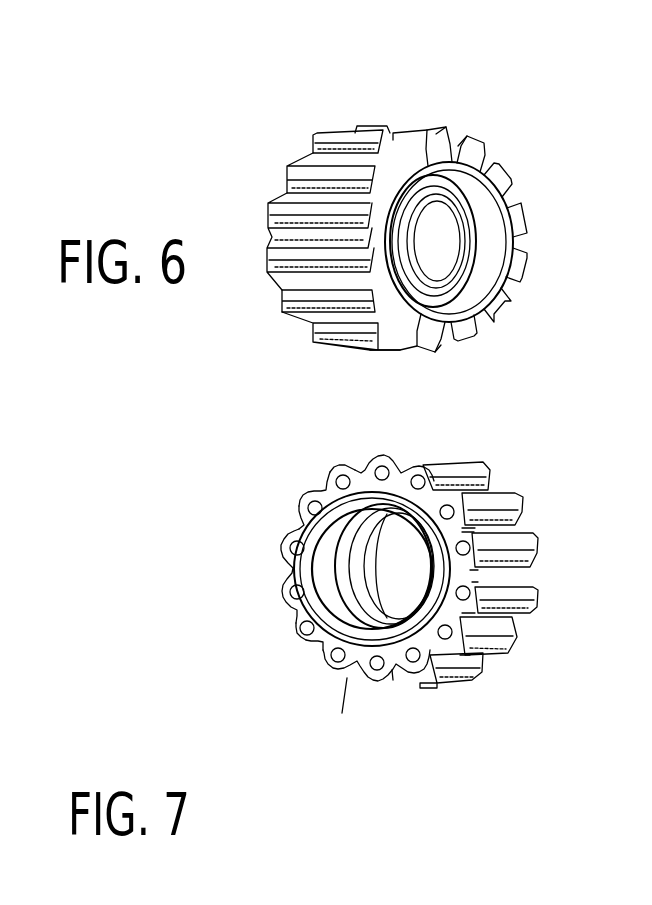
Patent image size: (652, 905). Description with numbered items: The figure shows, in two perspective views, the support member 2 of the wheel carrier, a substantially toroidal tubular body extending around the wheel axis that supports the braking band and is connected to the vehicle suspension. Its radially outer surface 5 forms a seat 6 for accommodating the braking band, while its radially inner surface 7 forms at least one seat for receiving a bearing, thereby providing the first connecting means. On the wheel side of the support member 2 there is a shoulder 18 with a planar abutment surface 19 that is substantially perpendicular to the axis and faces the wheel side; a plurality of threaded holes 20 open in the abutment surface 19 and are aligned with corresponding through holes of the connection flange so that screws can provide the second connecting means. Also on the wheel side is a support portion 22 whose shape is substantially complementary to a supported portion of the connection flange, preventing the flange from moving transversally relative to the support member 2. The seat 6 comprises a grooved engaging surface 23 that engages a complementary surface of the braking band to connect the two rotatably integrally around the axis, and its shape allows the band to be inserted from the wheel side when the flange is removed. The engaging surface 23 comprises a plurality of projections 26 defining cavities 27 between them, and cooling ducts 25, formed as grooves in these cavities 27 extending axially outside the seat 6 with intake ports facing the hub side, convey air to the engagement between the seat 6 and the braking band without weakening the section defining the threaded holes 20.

In FIG. 6, the support member 2 is at (414, 99).
In FIG. 7, the support member 2 is at (281, 726).
In FIG. 6, the radially outer surface 5 is at (345, 132).
In FIG. 7, the radially outer surface 5 is at (407, 452).
In FIG. 6, the seat 6 is at (298, 163).
In FIG. 7, the seat 6 is at (452, 462).
In FIG. 6, the radially inner surface 7 is at (485, 210).
In FIG. 7, the radially inner surface 7 is at (326, 568).
In FIG. 7, the shoulder 18 is at (393, 680).
In FIG. 7, the abutment surface 19 is at (342, 713).
In FIG. 7, the threaded holes 20 is at (467, 548).
In FIG. 7, the support portion 22 is at (280, 557).
In FIG. 6, the engaging surface 23 is at (300, 312).
In FIG. 7, the engaging surface 23 is at (457, 676).
In FIG. 6, the cooling ducts 25 is at (348, 322).
In FIG. 7, the cooling ducts 25 is at (492, 491).
In FIG. 7, the projections 26 is at (338, 456).
In FIG. 7, the cavities 27 is at (298, 517).